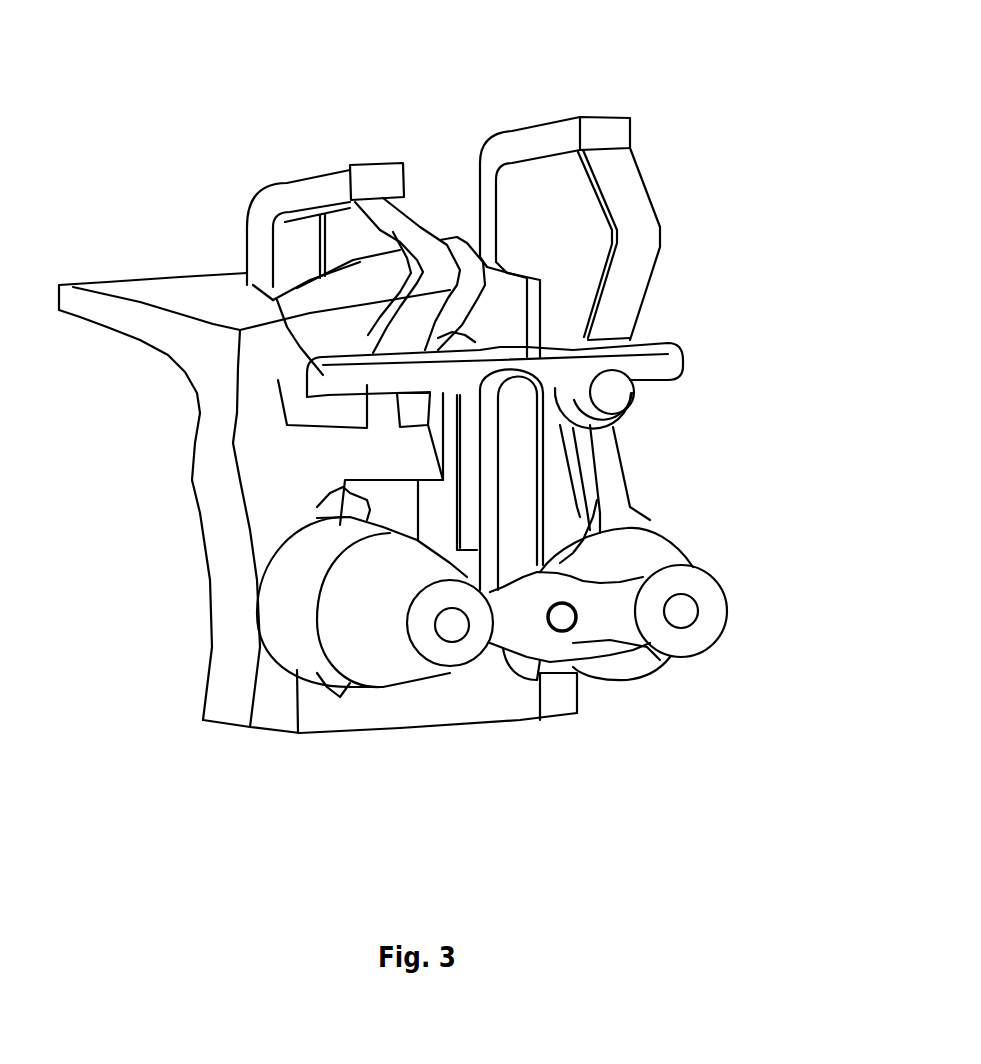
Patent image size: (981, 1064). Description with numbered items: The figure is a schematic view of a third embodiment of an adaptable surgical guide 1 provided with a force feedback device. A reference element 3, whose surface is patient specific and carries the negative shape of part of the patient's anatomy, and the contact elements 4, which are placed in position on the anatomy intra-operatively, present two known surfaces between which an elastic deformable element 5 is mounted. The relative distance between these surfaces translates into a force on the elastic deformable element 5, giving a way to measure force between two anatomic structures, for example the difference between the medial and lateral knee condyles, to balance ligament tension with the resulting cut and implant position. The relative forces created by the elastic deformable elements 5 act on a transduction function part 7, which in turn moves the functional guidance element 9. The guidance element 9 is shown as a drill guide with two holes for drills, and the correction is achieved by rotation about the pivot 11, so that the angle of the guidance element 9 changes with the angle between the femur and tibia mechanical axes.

The surgical guide 1 is at (165, 96).
The reference element 3 is at (87, 322).
The contact element 4 is at (307, 177).
The elastic deformable element 5 is at (417, 313).
The transduction function part 7 is at (507, 360).
The functional guidance element 9 is at (683, 612).
The pivot 11 is at (481, 399).